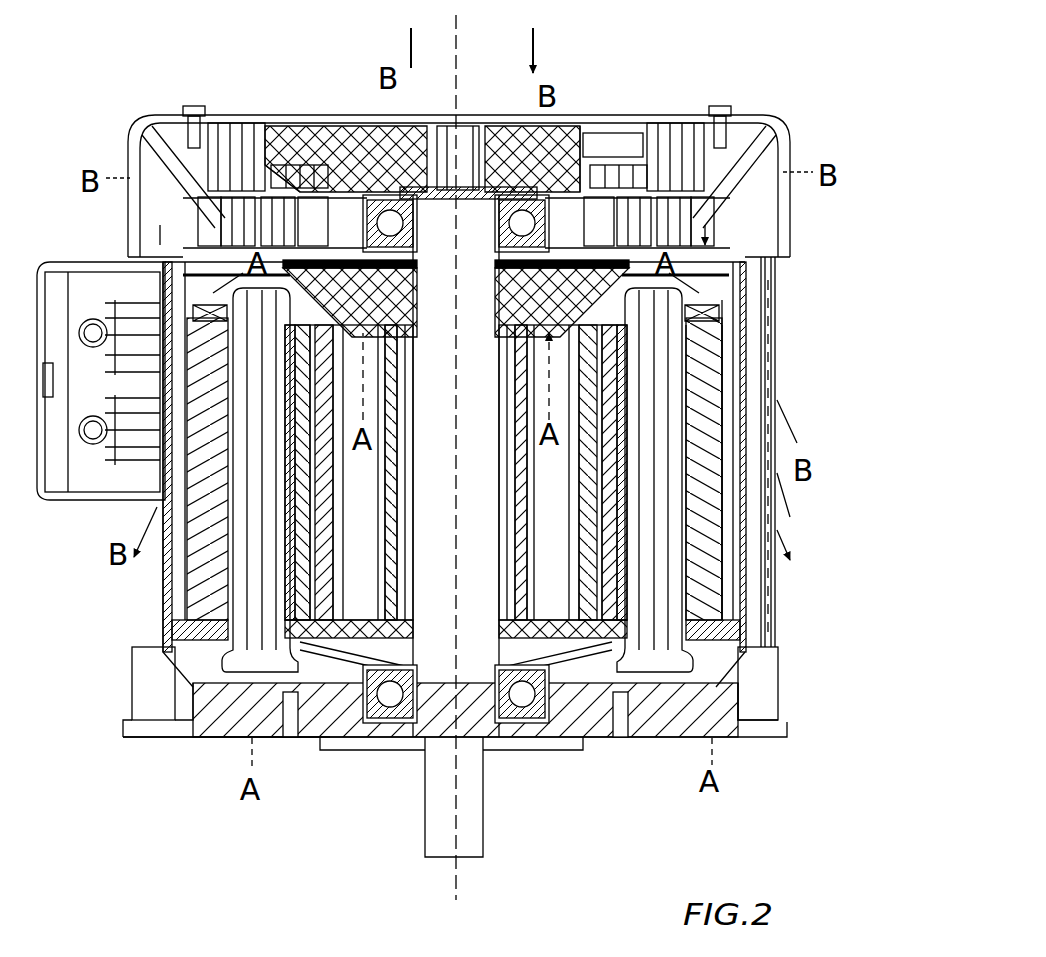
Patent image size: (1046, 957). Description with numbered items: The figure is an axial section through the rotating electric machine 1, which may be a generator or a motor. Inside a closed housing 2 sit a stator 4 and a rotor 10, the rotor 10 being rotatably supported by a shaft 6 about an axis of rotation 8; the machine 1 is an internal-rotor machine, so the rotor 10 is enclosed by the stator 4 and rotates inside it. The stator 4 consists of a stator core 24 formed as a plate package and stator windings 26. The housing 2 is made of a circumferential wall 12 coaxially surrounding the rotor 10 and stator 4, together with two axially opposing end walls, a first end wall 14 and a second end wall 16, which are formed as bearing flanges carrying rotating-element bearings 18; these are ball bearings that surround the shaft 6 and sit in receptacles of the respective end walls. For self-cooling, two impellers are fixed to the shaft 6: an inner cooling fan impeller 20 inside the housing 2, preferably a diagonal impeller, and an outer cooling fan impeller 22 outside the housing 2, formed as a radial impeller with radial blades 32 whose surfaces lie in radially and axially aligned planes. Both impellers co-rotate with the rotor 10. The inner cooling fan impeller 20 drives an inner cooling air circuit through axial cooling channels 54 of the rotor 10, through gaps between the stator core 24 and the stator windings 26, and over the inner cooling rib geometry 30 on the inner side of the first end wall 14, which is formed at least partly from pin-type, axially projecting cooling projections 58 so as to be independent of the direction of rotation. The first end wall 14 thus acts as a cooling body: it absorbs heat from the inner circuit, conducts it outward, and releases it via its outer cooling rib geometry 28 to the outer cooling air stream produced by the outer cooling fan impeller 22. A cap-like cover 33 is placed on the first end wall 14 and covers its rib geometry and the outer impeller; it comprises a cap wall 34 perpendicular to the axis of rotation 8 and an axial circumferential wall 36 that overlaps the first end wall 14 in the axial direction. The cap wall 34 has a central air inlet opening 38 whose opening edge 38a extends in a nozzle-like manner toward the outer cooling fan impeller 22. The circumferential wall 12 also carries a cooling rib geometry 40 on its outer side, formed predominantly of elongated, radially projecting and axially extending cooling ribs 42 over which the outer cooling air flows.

The rotating electric machine 1 is at (190, 830).
The housing 2 is at (158, 605).
The stator 4 is at (707, 585).
The shaft 6 is at (433, 693).
The axis of rotation 8 is at (458, 588).
The rotor 10 is at (325, 528).
The circumferential wall 12 is at (173, 637).
The first end wall 14 is at (586, 185).
The second end wall 16 is at (227, 707).
The rotating-element bearing 18 is at (508, 230).
The inner cooling fan impeller 20 is at (374, 284).
The outer cooling fan impeller 22 is at (503, 158).
The stator core 24 is at (702, 356).
The stator windings 26 is at (660, 335).
The outer cooling rib geometry 28 is at (697, 118).
The inner cooling rib geometry 30 is at (700, 218).
The radial blades 32 is at (305, 148).
The cap-like cover 33 is at (192, 105).
The cap wall 34 is at (262, 124).
The axial circumferential wall 36 is at (127, 222).
The air inlet opening 38 is at (363, 125).
The opening edge 38a is at (567, 185).
The cooling rib geometry 40 is at (770, 367).
The cooling ribs 42 is at (760, 622).
The axial cooling channels 54 is at (543, 497).
The cooling projections 58 is at (217, 230).